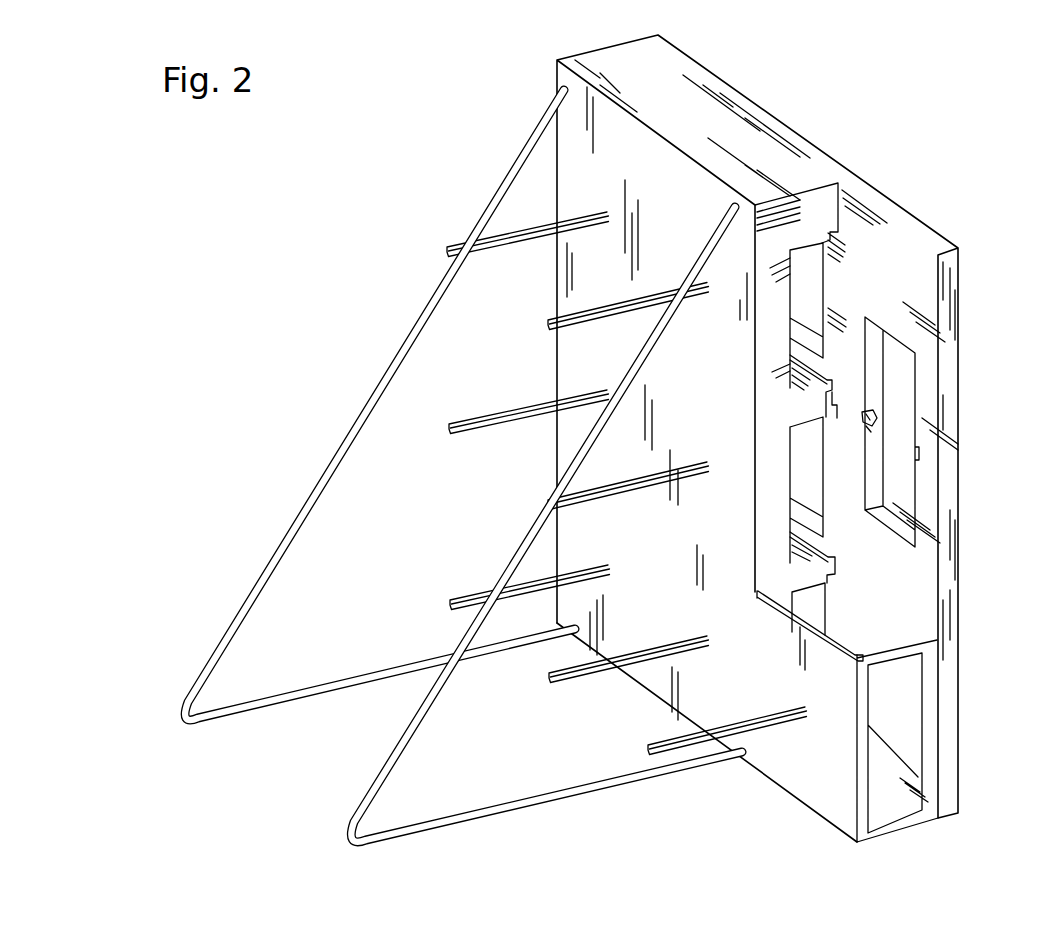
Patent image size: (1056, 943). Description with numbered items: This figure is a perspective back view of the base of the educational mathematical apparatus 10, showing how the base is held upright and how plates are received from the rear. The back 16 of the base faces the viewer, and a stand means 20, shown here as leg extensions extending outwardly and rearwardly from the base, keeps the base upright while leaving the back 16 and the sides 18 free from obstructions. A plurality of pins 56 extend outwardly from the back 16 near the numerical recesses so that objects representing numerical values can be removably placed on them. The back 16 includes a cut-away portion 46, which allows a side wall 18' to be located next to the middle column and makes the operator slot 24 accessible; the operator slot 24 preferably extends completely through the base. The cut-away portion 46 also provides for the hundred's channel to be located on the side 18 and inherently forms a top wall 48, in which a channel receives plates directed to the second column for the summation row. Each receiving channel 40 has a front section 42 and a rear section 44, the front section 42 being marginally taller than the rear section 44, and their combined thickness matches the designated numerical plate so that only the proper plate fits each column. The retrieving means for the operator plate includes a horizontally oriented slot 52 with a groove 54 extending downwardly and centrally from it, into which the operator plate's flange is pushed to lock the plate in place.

The educational mathematical apparatus 10 is at (960, 140).
The back 16 is at (573, 137).
The sides 18 is at (897, 763).
The side wall 18' is at (707, 464).
The stand means 20 is at (563, 795).
The operator slot 24 is at (905, 422).
The channel 40 is at (786, 366).
The front section 42 is at (834, 230).
The rear section 44 is at (790, 312).
The cut-away portion 46 is at (868, 248).
The top wall 48 is at (824, 637).
The horizontally oriented slot 52 is at (862, 410).
The groove 54 is at (868, 430).
The pins 56 is at (513, 410).